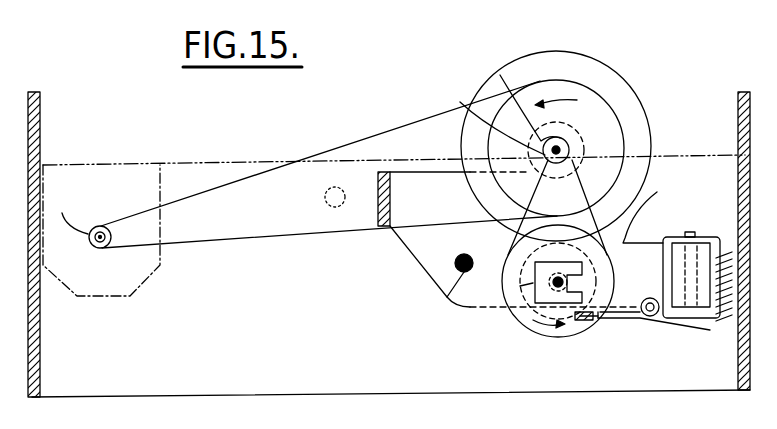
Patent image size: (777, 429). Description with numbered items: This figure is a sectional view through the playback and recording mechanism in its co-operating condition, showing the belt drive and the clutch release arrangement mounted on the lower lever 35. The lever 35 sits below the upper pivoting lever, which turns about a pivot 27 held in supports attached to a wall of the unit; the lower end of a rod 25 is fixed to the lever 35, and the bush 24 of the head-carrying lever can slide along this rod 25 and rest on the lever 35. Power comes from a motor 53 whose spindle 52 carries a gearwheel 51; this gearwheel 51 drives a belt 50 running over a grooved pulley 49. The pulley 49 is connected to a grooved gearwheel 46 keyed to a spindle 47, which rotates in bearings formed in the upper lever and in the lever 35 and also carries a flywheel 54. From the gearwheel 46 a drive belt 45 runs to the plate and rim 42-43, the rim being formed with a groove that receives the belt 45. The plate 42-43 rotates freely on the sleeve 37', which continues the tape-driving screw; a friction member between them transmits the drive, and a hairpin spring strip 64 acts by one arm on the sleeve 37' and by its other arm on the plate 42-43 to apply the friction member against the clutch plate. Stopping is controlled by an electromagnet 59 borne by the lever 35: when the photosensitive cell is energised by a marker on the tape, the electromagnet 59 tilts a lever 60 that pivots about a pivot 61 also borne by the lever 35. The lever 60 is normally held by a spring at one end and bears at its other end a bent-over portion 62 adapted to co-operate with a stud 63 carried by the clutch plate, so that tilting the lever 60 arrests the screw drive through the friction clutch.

The bush 24 is at (452, 265).
The rod 25 is at (455, 258).
The pivot 27 is at (327, 192).
The lever 35 is at (378, 215).
The sleeve 37' is at (595, 277).
The plate and rim 42-43 is at (520, 323).
The drive belt 45 is at (530, 185).
The grooved gearwheel 46 is at (460, 102).
The spindle 47 is at (500, 75).
The grooved pulley 49 is at (612, 123).
The belt 50 is at (359, 144).
The gearwheel 51 is at (62, 213).
The spindle 52 is at (100, 226).
The motor 53 is at (88, 297).
The flywheel 54 is at (627, 87).
The electromagnet 59 is at (680, 263).
The lever 60 is at (716, 250).
The pivot 61 is at (657, 317).
The bent-over portion 62 is at (607, 320).
The stud 63 is at (587, 318).
The hairpin spring strip 64 is at (532, 283).